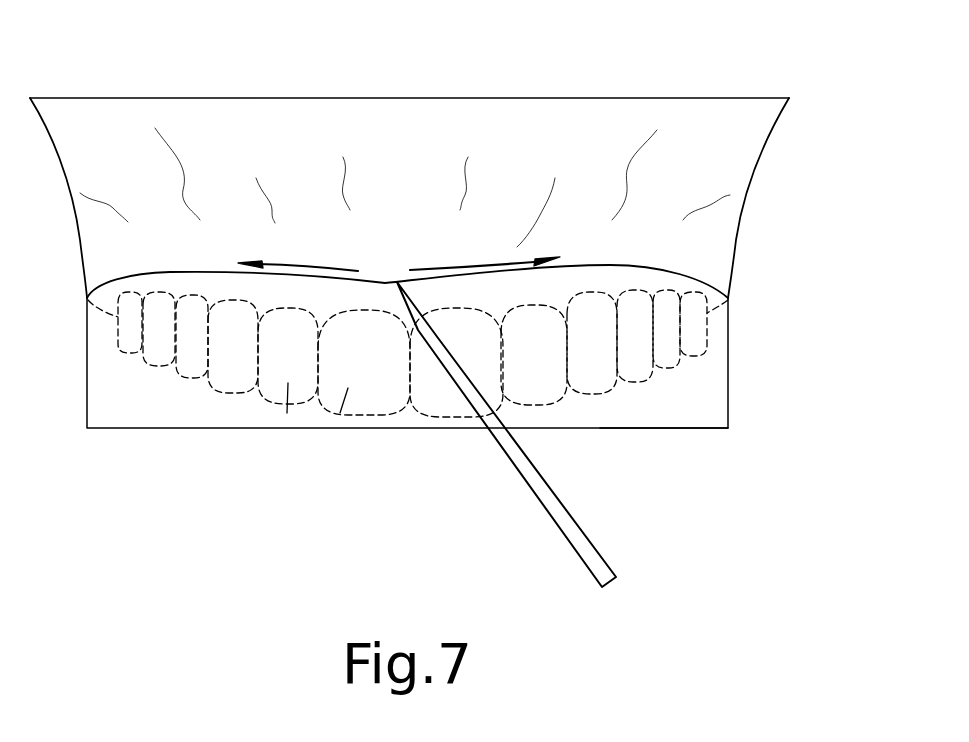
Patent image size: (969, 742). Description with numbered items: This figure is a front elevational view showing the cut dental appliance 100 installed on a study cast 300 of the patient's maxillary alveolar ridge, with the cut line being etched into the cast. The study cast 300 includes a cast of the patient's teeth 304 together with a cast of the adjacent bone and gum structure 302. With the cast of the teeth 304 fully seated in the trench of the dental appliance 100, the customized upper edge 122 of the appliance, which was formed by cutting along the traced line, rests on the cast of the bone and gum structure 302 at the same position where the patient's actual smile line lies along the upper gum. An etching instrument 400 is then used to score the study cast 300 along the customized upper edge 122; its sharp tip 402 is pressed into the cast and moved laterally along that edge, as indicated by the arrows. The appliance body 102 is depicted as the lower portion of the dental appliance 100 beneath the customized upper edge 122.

The study cast 300 is at (742, 90).
The cast of the bone and gum structure 302 is at (712, 227).
The dental appliance 100 is at (748, 338).
The appliance body 102 is at (702, 395).
The customized upper edge 122 is at (220, 272).
The sharp tip 402 is at (397, 282).
The etching instrument 400 is at (588, 543).
The cast of the patient's teeth 304 is at (335, 428).